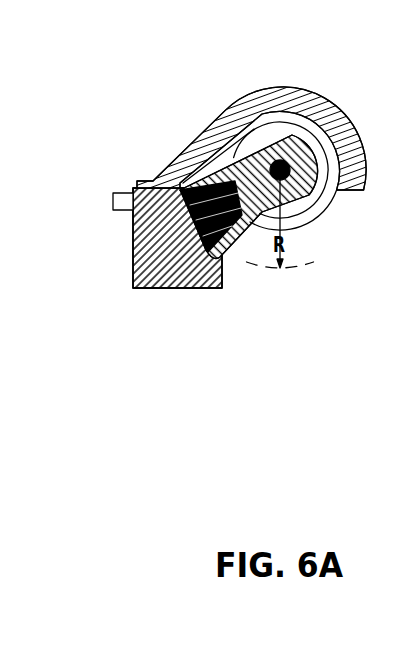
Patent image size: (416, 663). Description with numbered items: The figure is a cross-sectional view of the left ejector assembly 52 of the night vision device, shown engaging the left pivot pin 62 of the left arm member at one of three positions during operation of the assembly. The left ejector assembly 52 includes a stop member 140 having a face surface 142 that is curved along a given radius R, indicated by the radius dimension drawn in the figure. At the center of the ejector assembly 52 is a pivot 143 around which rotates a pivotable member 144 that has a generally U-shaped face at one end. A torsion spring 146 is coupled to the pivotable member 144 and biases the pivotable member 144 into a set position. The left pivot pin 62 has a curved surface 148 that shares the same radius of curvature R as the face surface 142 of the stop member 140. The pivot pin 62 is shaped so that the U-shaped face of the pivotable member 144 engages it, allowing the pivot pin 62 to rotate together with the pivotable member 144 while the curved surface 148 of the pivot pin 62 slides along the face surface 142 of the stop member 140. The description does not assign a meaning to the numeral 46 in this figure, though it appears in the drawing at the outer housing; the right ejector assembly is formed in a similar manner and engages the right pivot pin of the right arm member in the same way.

The housing 46 is at (290, 84).
The left ejector assembly 52 is at (304, 221).
The left pivot pin 62 is at (183, 236).
The stop member 140 is at (150, 232).
The face surface 142 is at (229, 264).
The pivot 143 is at (272, 162).
The pivotable member 144 is at (257, 170).
The torsion spring 146 is at (300, 123).
The curved surface 148 is at (130, 205).